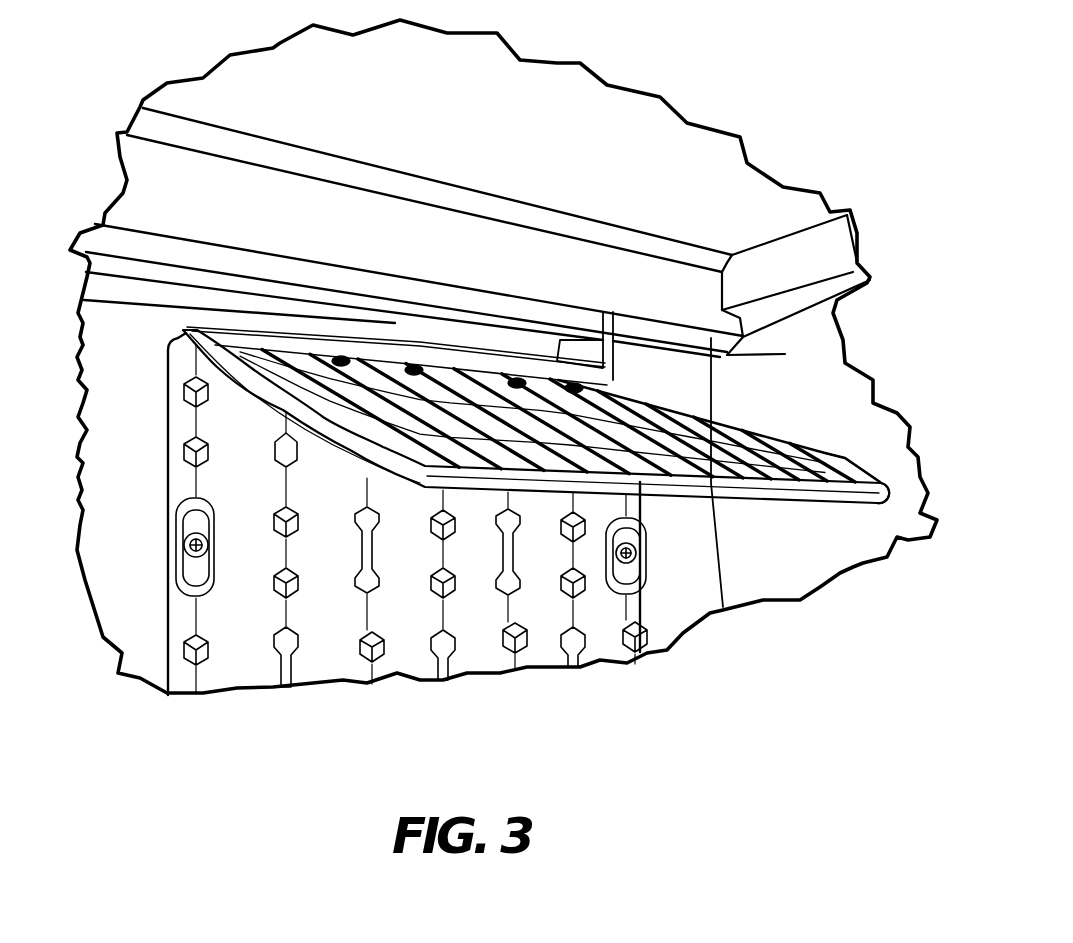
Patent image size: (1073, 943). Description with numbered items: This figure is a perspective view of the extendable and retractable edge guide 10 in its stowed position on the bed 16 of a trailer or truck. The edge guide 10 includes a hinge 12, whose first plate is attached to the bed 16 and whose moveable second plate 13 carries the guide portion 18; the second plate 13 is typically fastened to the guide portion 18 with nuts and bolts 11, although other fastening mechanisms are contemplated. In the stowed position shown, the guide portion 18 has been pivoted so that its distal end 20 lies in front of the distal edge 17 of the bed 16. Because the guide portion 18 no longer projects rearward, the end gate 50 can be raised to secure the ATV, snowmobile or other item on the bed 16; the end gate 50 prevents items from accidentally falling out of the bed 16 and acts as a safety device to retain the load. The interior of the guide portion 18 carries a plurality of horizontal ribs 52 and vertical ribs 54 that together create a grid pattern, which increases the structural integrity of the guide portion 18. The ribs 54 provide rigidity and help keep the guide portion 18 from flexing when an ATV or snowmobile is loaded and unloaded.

The edge guide 10 is at (856, 452).
The nuts and bolts 11 is at (347, 358).
The hinge 12 is at (381, 362).
The second plate 13 is at (558, 364).
The bed 16 is at (137, 577).
The edge 17 is at (160, 272).
The guide portion 18 is at (672, 408).
The distal end 20 is at (806, 495).
The end gate 50 is at (822, 270).
The horizontal ribs 52 is at (743, 612).
The vertical ribs 54 is at (711, 490).